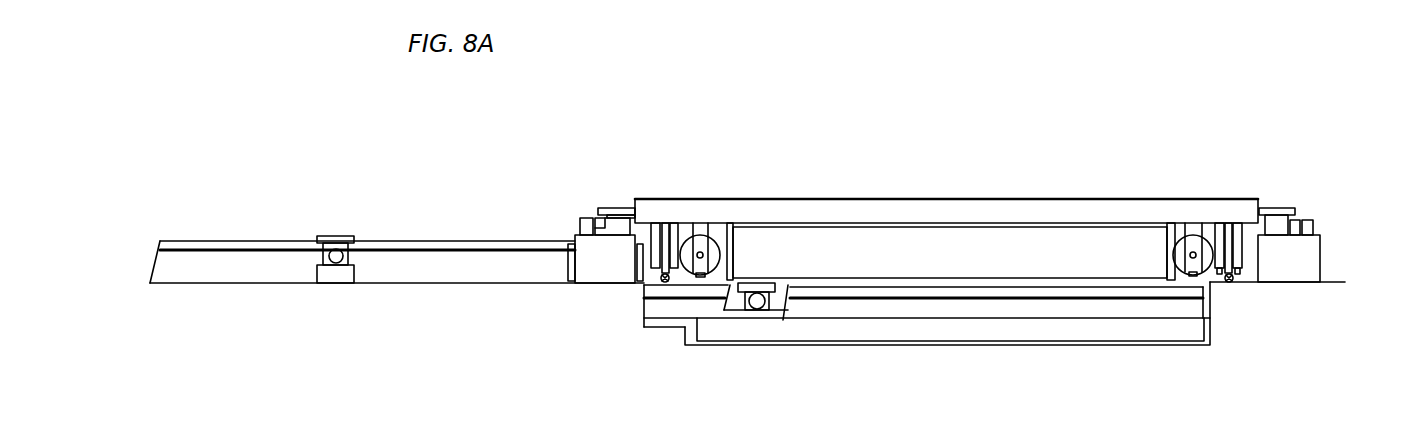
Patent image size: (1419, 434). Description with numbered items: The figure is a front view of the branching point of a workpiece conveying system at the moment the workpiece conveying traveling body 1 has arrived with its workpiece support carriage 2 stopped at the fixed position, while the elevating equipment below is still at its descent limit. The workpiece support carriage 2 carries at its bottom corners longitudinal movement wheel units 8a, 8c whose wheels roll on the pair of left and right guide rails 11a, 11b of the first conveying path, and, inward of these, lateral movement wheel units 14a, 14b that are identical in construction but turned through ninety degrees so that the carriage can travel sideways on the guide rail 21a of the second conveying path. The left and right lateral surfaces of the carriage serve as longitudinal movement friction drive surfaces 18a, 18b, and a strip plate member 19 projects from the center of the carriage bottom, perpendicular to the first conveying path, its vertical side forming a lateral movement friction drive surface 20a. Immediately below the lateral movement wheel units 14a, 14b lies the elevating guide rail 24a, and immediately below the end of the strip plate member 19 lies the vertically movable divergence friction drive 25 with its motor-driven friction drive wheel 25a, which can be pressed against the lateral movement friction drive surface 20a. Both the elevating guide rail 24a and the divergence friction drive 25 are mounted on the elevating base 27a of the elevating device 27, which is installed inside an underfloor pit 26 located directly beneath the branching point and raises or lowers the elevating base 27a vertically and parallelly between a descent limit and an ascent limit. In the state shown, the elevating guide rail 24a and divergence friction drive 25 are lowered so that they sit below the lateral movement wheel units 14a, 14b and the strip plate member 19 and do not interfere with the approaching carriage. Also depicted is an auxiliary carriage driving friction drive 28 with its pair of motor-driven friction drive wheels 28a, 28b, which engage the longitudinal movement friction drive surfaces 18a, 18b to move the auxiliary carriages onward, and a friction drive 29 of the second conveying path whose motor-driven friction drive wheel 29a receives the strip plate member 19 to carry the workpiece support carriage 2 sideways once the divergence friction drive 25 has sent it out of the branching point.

The workpiece conveying traveling body 1 is at (892, 193).
The workpiece support carriage 2 is at (963, 193).
The longitudinal movement wheel unit 8a is at (1280, 254).
The longitudinal movement wheel unit 8c is at (666, 221).
The guide rail 11a is at (1230, 281).
The guide rail 11b is at (650, 273).
The lateral movement wheel unit 14a is at (727, 242).
The lateral movement wheel unit 14b is at (1166, 253).
The longitudinal movement friction drive surface 18a is at (1272, 199).
The longitudinal movement friction drive surface 18b is at (635, 198).
The strip plate member 19 is at (975, 278).
The lateral movement friction drive surface 20a is at (1032, 248).
The guide rail 21a is at (438, 248).
The elevating guide rail 24a is at (678, 297).
The divergence friction drive 25 is at (762, 277).
The motor-driven friction drive wheel 25a is at (775, 283).
The underfloor pit 26 is at (1205, 328).
The elevating device 27 is at (1154, 347).
The elevating base 27a is at (705, 308).
The auxiliary carriage driving friction drive 28 is at (1304, 210).
The motor-driven friction drive wheel 28a is at (1292, 207).
The motor-driven friction drive wheel 28b is at (611, 208).
The friction drive 29 is at (341, 229).
The motor-driven friction drive wheel 29a is at (323, 236).